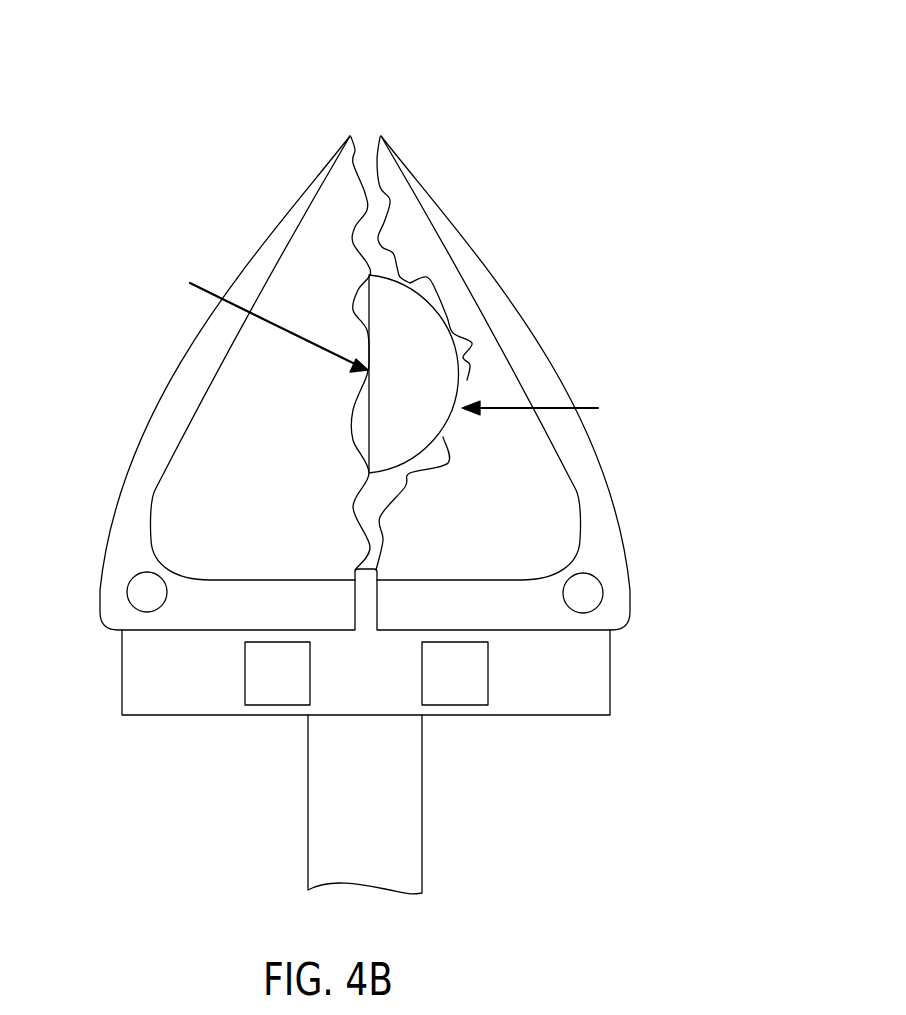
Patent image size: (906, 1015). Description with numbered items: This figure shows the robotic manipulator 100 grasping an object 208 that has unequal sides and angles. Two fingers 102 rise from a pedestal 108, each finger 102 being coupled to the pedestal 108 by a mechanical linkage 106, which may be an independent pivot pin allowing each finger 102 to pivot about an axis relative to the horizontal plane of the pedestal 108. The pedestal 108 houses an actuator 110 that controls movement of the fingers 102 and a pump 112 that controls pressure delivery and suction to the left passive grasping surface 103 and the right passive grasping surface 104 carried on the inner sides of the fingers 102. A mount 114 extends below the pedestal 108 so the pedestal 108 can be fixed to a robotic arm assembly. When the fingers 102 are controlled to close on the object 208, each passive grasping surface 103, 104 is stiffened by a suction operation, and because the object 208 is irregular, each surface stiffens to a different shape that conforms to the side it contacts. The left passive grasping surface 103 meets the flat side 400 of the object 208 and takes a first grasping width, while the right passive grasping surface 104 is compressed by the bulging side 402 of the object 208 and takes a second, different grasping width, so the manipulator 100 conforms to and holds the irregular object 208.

The robotic manipulator 100 is at (226, 108).
The finger 102 is at (192, 360).
The left passive grasping surface 103 is at (285, 258).
The right passive grasping surface 104 is at (447, 258).
The mechanical linkage 106 is at (590, 593).
The pedestal 108 is at (218, 707).
The actuator 110 is at (292, 689).
The pump 112 is at (470, 689).
The mount 114 is at (413, 805).
The object 208 is at (430, 320).
The flat side 400 is at (260, 317).
The bulging side 402 is at (549, 411).